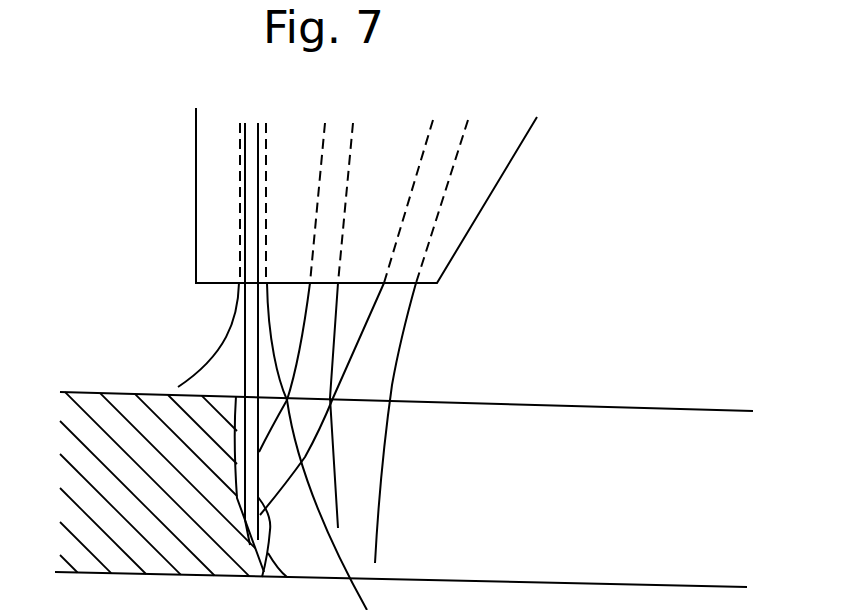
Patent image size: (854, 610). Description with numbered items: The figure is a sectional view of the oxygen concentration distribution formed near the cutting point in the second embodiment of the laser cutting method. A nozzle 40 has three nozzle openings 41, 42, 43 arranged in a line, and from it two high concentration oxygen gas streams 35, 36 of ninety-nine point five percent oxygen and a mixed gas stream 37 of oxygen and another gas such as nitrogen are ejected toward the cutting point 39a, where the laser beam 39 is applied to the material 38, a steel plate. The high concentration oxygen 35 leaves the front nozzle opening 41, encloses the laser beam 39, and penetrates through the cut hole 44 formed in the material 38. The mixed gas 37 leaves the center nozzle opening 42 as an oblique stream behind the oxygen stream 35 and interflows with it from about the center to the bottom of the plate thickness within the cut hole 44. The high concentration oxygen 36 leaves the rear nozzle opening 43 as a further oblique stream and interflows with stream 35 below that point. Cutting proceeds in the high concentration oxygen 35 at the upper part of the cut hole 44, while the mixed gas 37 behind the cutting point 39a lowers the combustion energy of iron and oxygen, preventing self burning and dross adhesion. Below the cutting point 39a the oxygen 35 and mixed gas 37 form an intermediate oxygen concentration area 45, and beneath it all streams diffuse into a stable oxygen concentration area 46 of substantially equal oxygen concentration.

The high concentration oxygen gas stream 35 is at (238, 310).
The high concentration oxygen gas stream 36 is at (393, 372).
The mixed gas stream 37 is at (335, 312).
The material to be cut 38 is at (90, 393).
The laser beam 39 is at (265, 565).
The cutting point 39a is at (240, 395).
The nozzle 40 is at (196, 252).
The nozzle opening 41 is at (240, 210).
The nozzle opening 42 is at (322, 173).
The nozzle opening 43 is at (409, 180).
The cut hole 44 is at (523, 418).
The intermediate oxygen concentration area 45 is at (295, 482).
The stable oxygen concentration area 46 is at (317, 548).